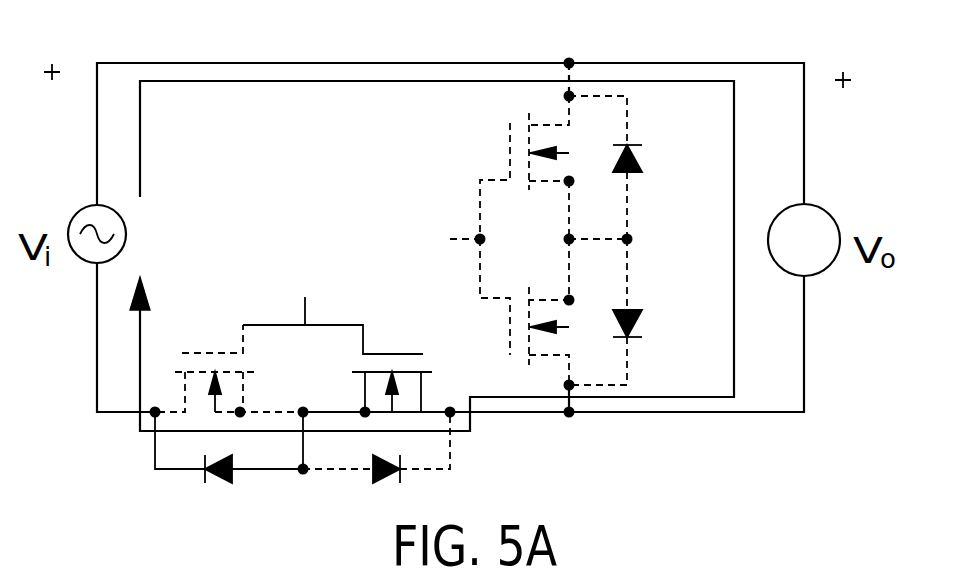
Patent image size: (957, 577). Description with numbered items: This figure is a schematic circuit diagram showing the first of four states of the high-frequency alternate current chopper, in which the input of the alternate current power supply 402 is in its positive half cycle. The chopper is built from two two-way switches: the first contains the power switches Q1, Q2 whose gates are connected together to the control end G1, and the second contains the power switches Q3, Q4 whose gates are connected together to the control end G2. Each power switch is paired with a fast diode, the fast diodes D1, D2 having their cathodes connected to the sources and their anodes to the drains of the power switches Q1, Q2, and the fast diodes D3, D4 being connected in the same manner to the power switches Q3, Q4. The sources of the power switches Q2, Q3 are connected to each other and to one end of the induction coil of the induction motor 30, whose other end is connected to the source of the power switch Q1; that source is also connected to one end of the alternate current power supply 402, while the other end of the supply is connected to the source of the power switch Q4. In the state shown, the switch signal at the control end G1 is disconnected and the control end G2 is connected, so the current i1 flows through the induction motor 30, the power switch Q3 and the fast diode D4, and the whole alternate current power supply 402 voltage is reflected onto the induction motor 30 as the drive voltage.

The alternate current power supply 402 is at (95, 207).
The induction motor 30 is at (823, 215).
The current i1 is at (688, 82).
The power switch Q1 is at (521, 167).
The power switch Q2 is at (520, 312).
The power switch Q3 is at (401, 366).
The power switch Q4 is at (229, 367).
The fast diode D1 is at (605, 167).
The fast diode D2 is at (605, 312).
The fast diode D3 is at (376, 447).
The fast diode D4 is at (229, 447).
The control end G1 is at (448, 238).
The control end G2 is at (333, 311).